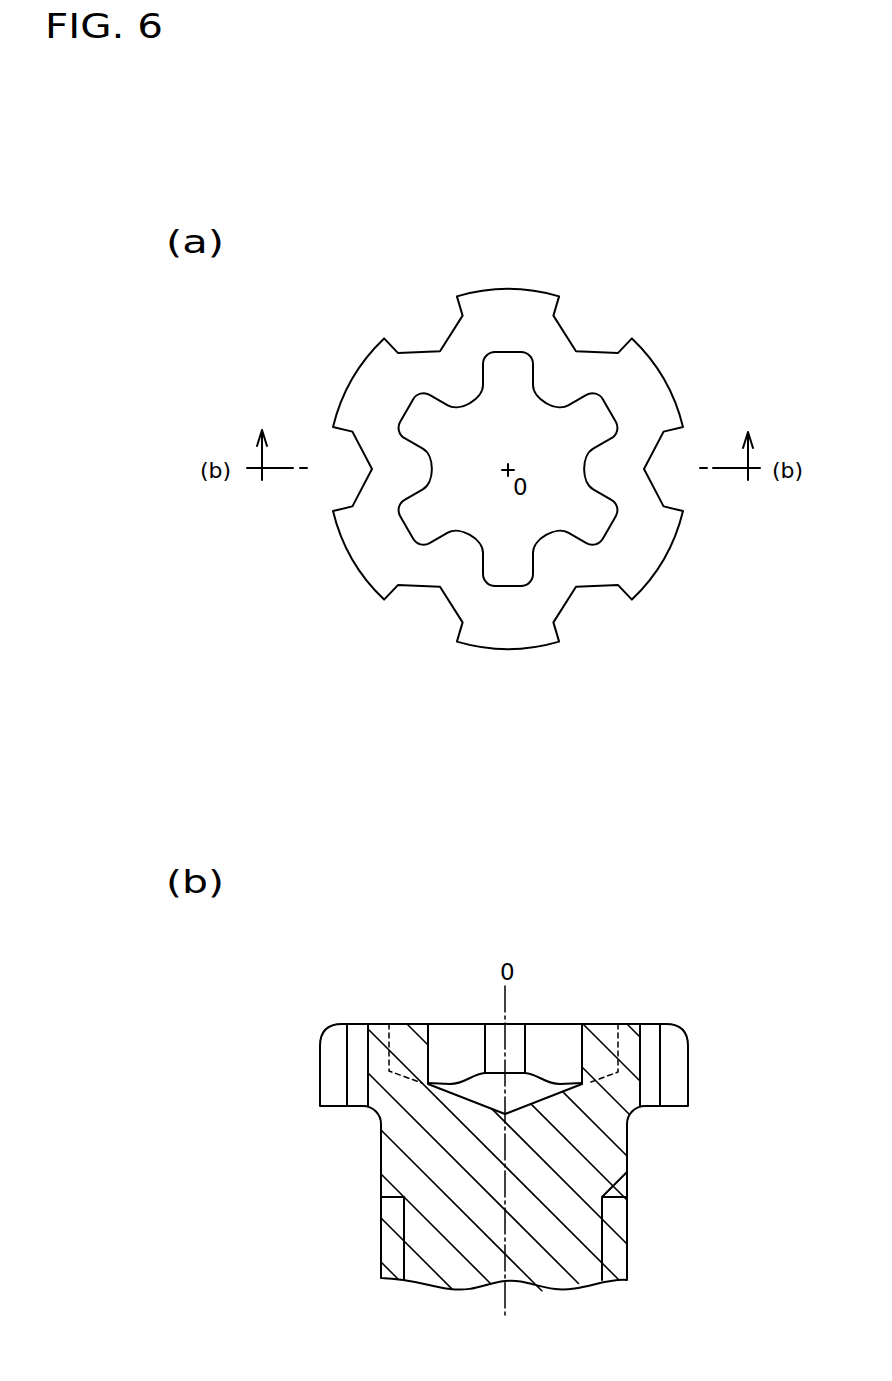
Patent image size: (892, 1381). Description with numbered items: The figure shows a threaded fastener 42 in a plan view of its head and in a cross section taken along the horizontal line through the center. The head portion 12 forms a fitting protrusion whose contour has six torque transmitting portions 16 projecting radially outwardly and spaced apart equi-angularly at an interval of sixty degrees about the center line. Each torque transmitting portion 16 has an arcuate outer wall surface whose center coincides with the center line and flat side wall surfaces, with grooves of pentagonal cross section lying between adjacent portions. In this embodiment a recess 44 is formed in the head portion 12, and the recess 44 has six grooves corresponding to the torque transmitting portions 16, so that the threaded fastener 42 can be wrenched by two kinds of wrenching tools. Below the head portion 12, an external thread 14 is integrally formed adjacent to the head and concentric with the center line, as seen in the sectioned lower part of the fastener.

The threaded fastener 42 is at (658, 307).
The head portion 12 is at (468, 565).
The torque transmitting portions 16 is at (365, 378).
The recess 44 is at (570, 448).
The external thread 14 is at (388, 1242).